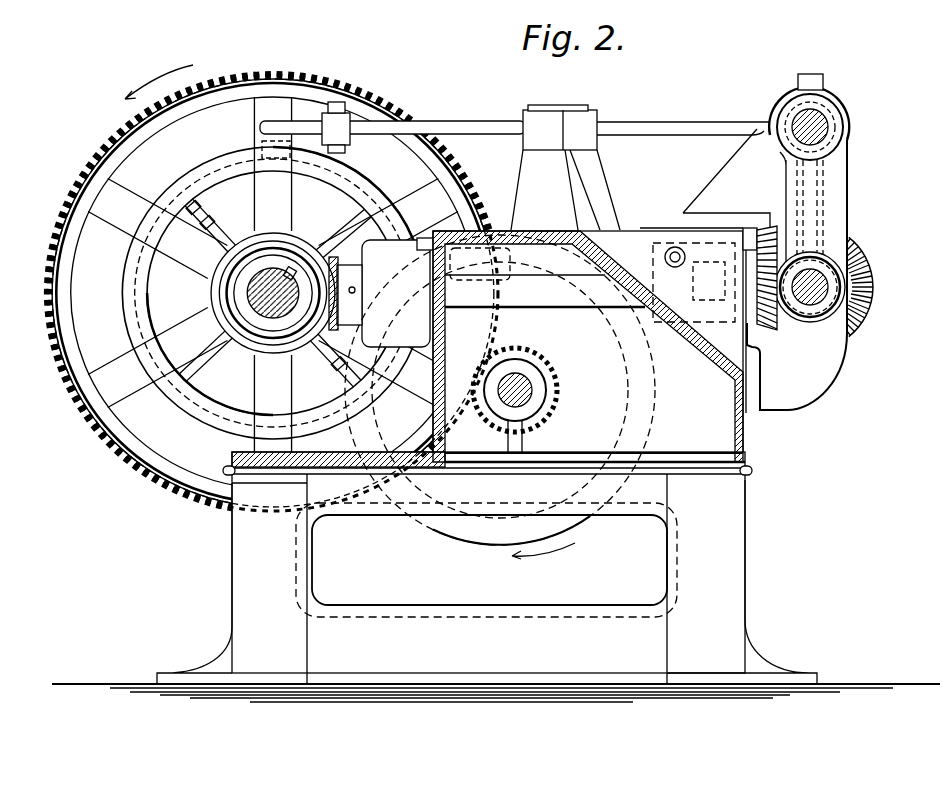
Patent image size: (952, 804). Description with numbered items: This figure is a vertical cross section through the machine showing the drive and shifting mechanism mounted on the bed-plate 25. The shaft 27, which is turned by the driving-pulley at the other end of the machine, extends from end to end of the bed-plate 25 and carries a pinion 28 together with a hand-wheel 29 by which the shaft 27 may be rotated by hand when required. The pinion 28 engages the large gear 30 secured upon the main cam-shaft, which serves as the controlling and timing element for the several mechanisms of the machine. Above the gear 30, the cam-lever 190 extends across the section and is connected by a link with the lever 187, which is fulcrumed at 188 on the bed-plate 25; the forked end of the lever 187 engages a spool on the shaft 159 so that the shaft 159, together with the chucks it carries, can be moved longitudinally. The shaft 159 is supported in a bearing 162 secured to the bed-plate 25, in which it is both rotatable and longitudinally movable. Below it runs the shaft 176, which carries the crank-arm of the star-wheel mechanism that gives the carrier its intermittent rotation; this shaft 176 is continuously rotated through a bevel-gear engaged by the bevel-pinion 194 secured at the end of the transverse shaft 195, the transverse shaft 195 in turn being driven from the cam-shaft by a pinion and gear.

The gear 30 is at (273, 277).
The cam-lever 190 is at (470, 111).
The fulcrum 188 is at (580, 108).
The lever 187 is at (673, 111).
The shaft 159 is at (818, 121).
The bearing 162 is at (848, 193).
The shaft 176 is at (824, 283).
The bevel-pinion 194 is at (763, 327).
The bed-plate 25 is at (747, 433).
The transverse shaft 195 is at (547, 294).
The pinion 28 is at (550, 353).
The shaft 27 is at (516, 392).
The hand-wheel 29 is at (497, 527).